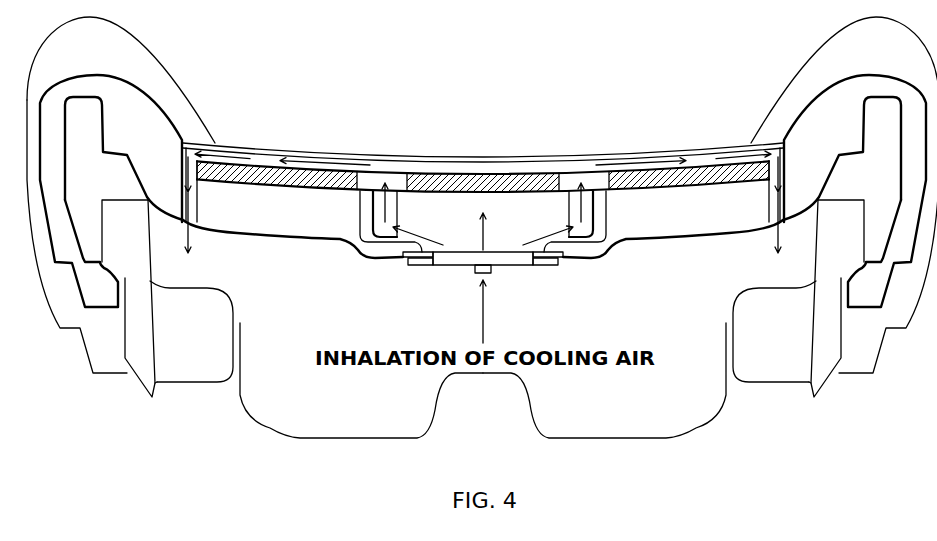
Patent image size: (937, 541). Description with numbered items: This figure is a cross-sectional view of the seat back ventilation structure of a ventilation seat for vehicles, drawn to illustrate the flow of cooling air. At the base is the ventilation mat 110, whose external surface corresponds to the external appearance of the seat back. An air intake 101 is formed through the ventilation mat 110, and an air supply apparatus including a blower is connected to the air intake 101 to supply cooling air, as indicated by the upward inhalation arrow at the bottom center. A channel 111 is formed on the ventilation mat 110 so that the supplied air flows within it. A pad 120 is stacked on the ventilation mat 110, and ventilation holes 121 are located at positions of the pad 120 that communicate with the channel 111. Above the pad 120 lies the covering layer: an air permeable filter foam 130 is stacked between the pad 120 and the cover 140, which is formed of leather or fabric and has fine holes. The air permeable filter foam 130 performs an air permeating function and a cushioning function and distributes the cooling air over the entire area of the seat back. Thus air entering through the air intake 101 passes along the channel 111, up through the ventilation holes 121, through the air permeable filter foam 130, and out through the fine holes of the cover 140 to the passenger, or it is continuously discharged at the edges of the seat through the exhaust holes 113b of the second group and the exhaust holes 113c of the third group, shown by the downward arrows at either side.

The air intake 101 is at (452, 268).
The ventilation mat 110 is at (667, 312).
The channel 111 is at (379, 203).
The exhaust holes of the second group 113b is at (773, 143).
The exhaust holes of the third group 113c is at (193, 142).
The pad 120 is at (468, 177).
The ventilation holes 121 is at (407, 180).
The air permeable filter foam 130 is at (707, 147).
The cover 140 is at (637, 147).